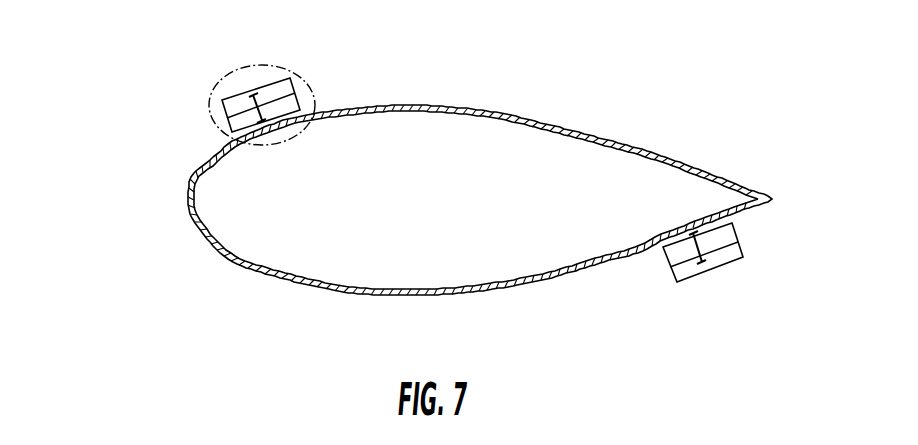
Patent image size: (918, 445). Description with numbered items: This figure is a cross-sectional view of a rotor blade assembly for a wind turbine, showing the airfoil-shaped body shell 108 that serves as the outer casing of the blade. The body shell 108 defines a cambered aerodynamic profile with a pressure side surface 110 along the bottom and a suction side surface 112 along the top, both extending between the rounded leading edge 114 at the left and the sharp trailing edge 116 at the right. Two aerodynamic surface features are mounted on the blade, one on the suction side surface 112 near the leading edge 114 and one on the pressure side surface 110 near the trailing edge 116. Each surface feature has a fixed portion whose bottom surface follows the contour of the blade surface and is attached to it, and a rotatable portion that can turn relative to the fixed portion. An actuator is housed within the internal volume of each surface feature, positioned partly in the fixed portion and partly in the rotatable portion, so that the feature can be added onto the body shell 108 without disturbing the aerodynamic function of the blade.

The body shell 108 is at (677, 158).
The pressure side surface 110 is at (438, 296).
The suction side surface 112 is at (485, 113).
The leading edge 114 is at (187, 197).
The trailing edge 116 is at (774, 199).